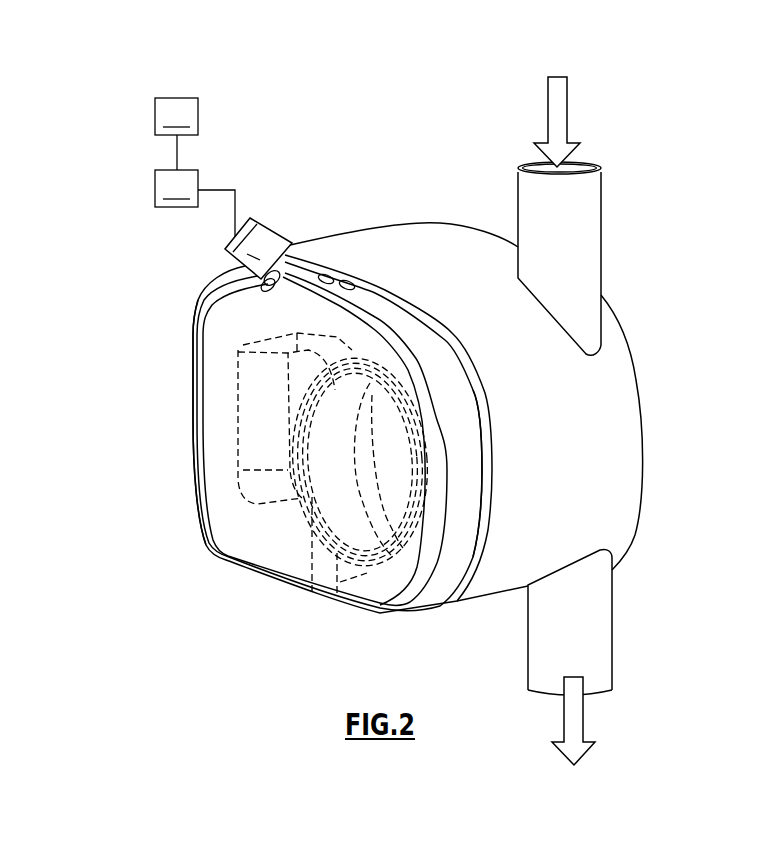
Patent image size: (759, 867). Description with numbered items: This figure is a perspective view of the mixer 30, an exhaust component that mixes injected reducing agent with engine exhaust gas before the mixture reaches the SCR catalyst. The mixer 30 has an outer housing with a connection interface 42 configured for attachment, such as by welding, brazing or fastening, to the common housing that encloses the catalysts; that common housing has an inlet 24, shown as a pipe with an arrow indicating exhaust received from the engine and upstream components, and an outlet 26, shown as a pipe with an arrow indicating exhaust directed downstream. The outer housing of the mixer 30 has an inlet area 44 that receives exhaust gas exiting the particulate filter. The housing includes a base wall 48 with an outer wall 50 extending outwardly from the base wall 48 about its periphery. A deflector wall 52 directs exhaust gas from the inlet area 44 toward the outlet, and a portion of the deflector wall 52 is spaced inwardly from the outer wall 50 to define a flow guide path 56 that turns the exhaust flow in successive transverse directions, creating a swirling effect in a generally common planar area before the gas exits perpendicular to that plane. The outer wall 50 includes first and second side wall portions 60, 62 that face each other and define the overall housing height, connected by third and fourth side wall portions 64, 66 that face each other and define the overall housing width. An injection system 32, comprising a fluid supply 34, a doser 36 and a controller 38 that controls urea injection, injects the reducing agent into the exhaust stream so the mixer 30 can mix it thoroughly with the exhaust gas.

The inlet 24 is at (562, 113).
The outlet 26 is at (598, 640).
The mixer 30 is at (250, 593).
The injection system 32 is at (297, 237).
The fluid supply 34 is at (195, 187).
The doser 36 is at (236, 250).
The controller 38 is at (176, 116).
The connection interface 42 is at (497, 512).
The inlet area 44 is at (380, 520).
The base wall 48 is at (216, 555).
The outer wall 50 is at (213, 354).
The deflector wall 52 is at (262, 467).
The flow guide path 56 is at (217, 395).
The first side wall portion 60 is at (372, 298).
The second side wall portion 62 is at (293, 592).
The third side wall portion 64 is at (458, 535).
The fourth side wall portion 66 is at (196, 462).